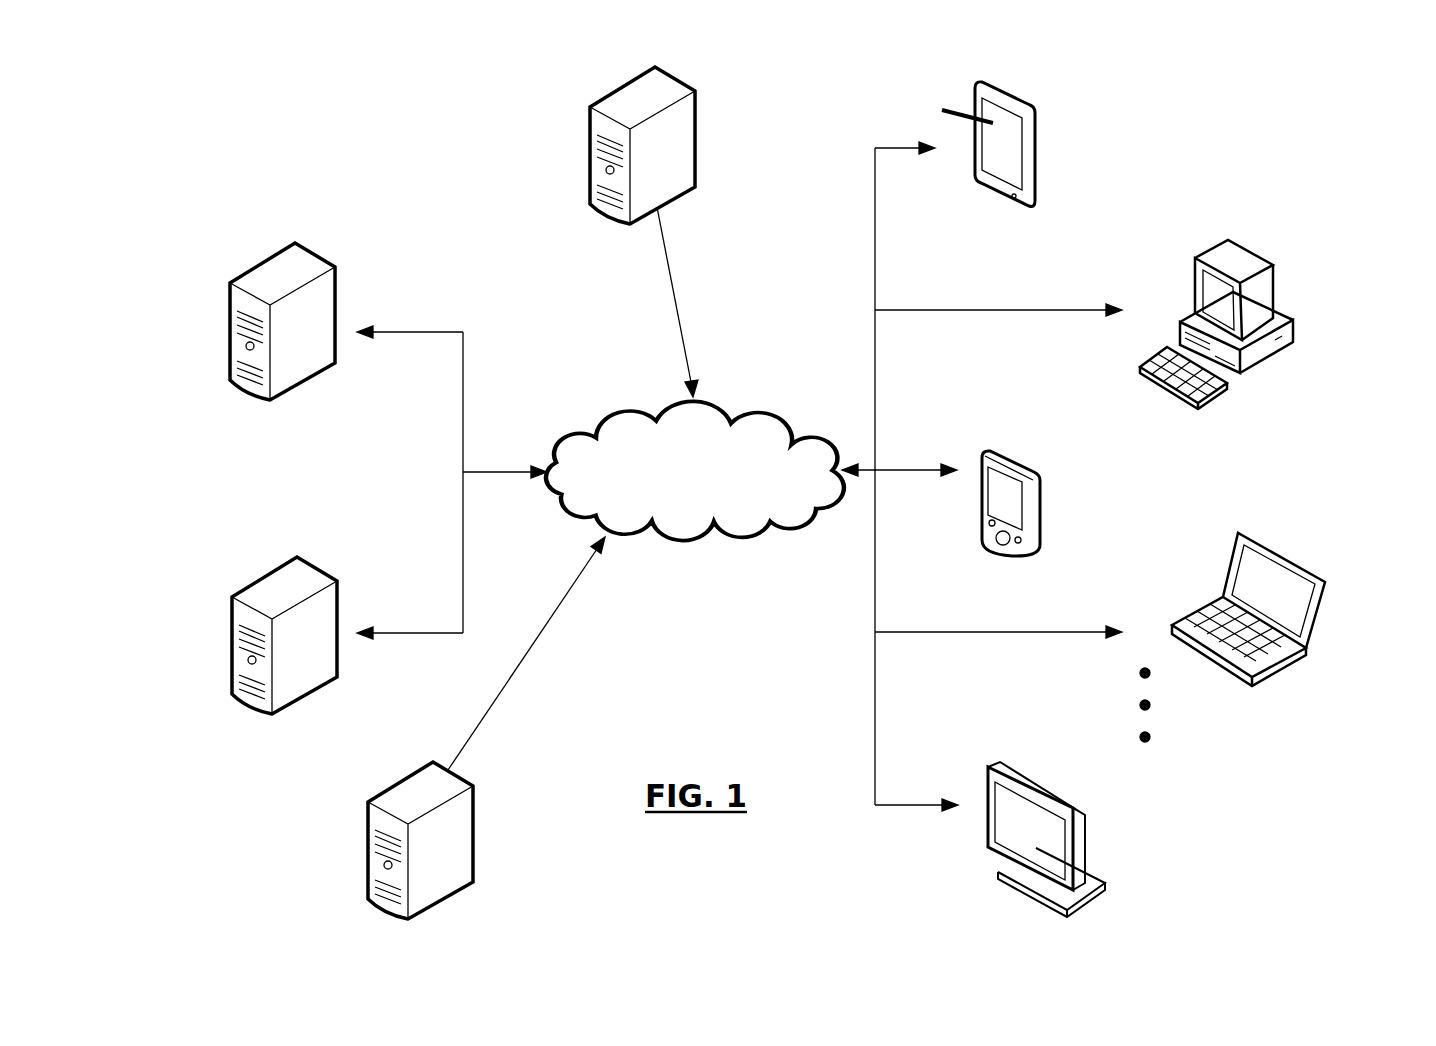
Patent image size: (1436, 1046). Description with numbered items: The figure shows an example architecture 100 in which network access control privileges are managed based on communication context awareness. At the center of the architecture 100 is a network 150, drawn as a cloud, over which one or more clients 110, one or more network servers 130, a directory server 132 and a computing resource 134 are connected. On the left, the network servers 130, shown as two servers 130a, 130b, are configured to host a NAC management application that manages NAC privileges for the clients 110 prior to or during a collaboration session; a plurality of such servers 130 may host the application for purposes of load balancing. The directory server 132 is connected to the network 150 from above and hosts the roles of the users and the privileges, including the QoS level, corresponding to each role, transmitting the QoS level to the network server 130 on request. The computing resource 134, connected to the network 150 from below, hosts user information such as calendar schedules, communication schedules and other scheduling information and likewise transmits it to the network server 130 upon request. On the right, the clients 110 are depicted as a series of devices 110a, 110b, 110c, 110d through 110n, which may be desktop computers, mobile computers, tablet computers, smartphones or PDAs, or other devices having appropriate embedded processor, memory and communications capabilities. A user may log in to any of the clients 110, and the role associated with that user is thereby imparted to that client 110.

The architecture 100 is at (686, 888).
The client 110 is at (1197, 55).
The client 110a is at (998, 157).
The client 110b is at (1225, 308).
The client 110c is at (1012, 501).
The client 110d is at (1282, 609).
The client 110n is at (1042, 838).
The network server 130 is at (372, 206).
The network server 130a is at (280, 283).
The network server 130b is at (278, 593).
The directory server 132 is at (675, 76).
The computing resource 134 is at (388, 789).
The network 150 is at (711, 470).